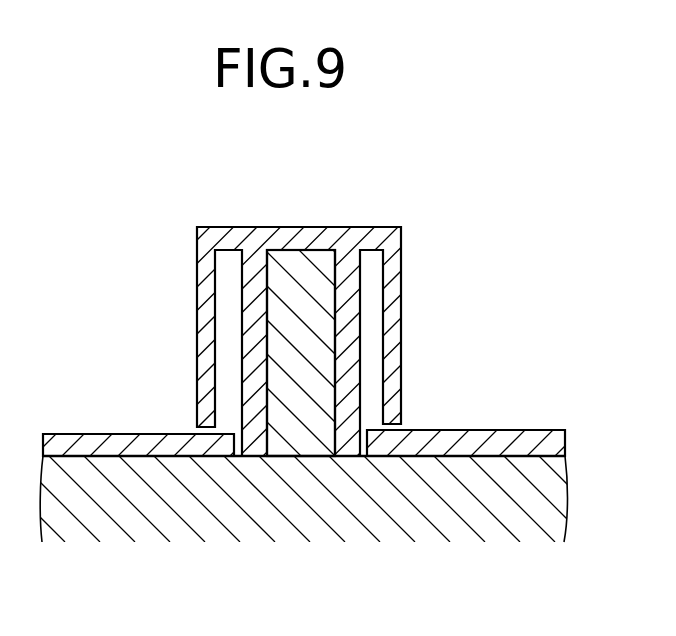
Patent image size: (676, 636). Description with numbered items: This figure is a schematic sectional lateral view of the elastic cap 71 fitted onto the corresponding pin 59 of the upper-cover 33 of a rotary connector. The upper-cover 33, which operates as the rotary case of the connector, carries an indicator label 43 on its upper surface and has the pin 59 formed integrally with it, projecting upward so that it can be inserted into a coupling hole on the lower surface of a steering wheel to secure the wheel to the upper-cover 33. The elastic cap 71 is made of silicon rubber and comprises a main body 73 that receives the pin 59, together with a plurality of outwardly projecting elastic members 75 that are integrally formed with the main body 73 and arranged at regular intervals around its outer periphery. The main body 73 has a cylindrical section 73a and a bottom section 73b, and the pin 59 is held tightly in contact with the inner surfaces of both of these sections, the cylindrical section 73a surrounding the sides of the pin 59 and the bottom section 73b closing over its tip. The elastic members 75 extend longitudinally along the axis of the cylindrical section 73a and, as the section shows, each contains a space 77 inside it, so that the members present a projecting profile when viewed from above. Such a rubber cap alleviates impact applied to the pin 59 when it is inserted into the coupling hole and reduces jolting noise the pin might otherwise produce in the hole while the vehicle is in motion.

The upper-cover 33 is at (112, 472).
The indicator label 43 is at (493, 445).
The pin 59 is at (285, 255).
The elastic cap 71 is at (408, 215).
The main body 73 is at (343, 228).
The cylindrical section 73a is at (347, 303).
The bottom section 73b is at (293, 240).
The elastic member 75 is at (210, 278).
The space 77 is at (230, 322).